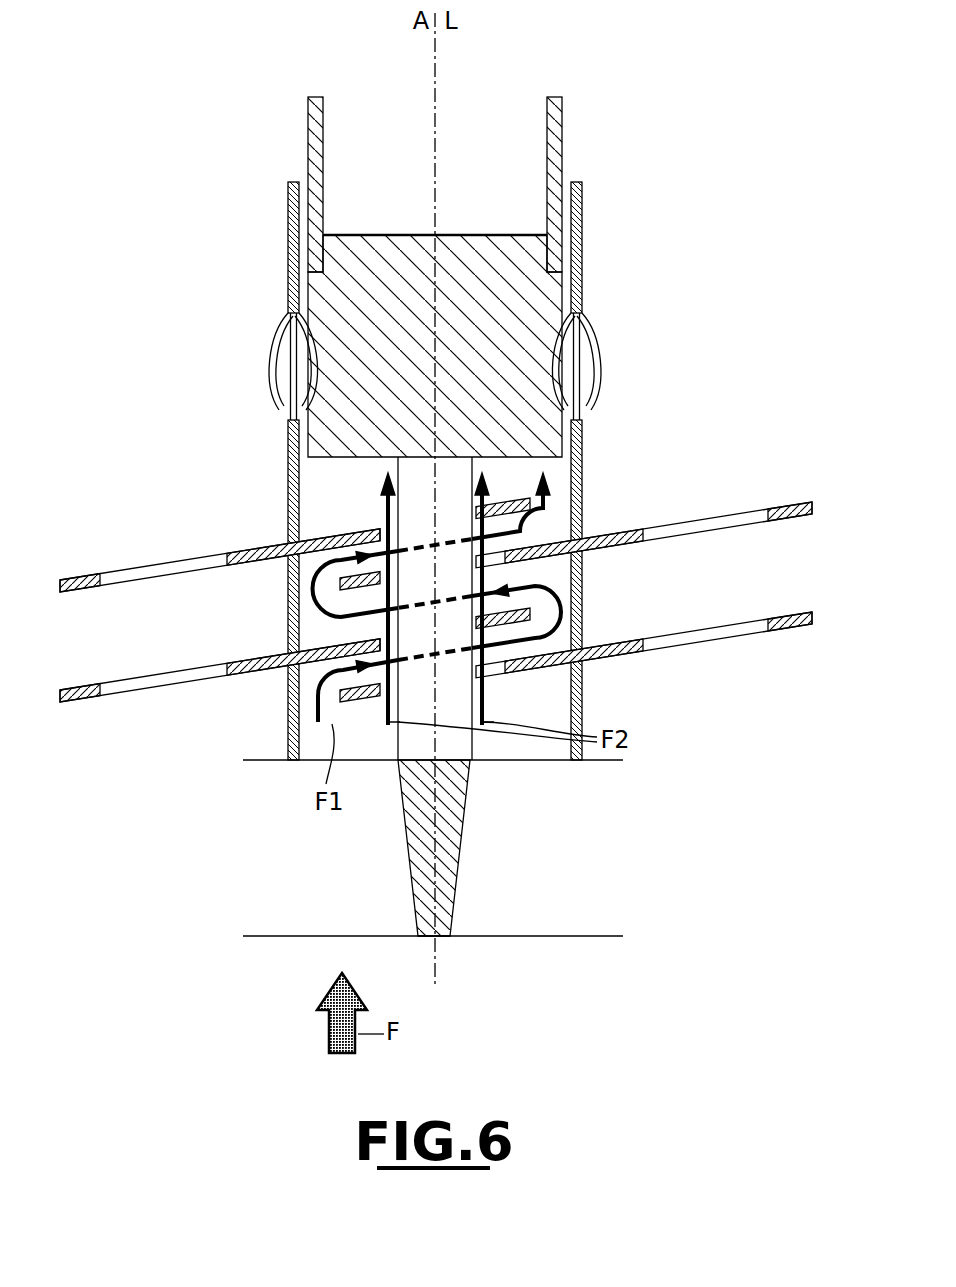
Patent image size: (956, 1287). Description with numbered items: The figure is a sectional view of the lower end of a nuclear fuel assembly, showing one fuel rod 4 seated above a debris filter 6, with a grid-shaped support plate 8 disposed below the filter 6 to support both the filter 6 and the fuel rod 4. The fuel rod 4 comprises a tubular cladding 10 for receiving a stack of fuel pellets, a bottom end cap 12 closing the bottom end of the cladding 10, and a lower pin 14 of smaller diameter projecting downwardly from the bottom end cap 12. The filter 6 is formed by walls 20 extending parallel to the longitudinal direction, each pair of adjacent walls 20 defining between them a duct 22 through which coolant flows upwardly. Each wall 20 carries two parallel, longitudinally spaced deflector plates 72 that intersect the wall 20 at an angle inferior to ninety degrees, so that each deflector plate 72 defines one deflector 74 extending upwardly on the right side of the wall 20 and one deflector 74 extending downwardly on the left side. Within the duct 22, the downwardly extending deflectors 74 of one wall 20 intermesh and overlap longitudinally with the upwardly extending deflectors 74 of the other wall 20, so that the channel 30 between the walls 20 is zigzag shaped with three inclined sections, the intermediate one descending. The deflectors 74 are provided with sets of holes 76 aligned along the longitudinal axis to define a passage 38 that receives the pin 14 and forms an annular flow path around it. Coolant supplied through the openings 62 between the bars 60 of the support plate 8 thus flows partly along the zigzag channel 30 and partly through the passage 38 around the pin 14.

The fuel rod 4 is at (447, 526).
The debris filter 6 is at (436, 526).
The support plate 8 is at (462, 960).
The tubular cladding 10 is at (320, 123).
The bottom end cap 12 is at (540, 300).
The lower pin 14 is at (460, 743).
The wall 20 is at (273, 180).
The duct 22 is at (320, 476).
The channel 30 is at (311, 640).
The passage 38 is at (388, 755).
The bar 60 is at (450, 902).
The opening 62 is at (280, 940).
The deflector plate 72 is at (436, 562).
The deflector 74 is at (247, 552).
The hole 76 is at (143, 684).